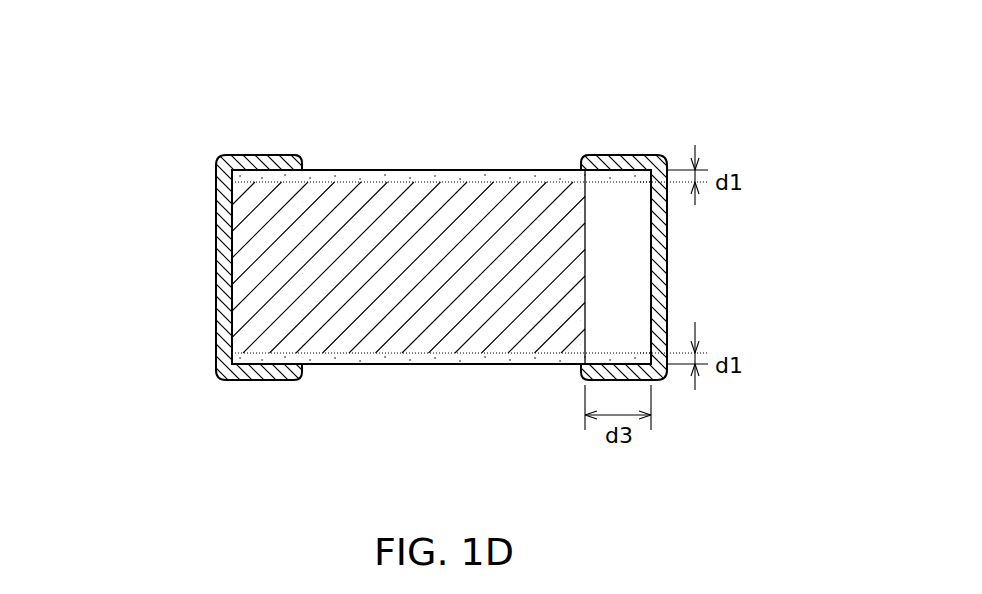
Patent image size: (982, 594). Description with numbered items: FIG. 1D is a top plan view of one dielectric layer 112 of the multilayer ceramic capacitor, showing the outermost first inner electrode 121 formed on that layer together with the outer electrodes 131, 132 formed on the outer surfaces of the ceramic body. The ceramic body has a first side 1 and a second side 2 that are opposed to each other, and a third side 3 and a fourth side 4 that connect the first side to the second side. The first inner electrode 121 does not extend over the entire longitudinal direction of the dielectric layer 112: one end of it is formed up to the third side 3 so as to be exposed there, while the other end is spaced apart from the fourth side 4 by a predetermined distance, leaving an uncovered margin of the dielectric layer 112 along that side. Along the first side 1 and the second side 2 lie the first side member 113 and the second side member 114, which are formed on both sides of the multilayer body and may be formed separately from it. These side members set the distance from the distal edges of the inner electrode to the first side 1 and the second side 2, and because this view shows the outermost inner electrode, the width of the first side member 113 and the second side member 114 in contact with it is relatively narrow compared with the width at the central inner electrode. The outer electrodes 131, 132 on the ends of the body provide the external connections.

The first side 1 is at (461, 143).
The second side 2 is at (467, 383).
The third side 3 is at (207, 289).
The fourth side 4 is at (674, 256).
The dielectric layer 112 is at (645, 295).
The first side member 113 is at (216, 174).
The second side member 114 is at (216, 349).
The first inner electrode 121 is at (410, 336).
The outer electrode 131 is at (262, 154).
The outer electrode 132 is at (625, 155).